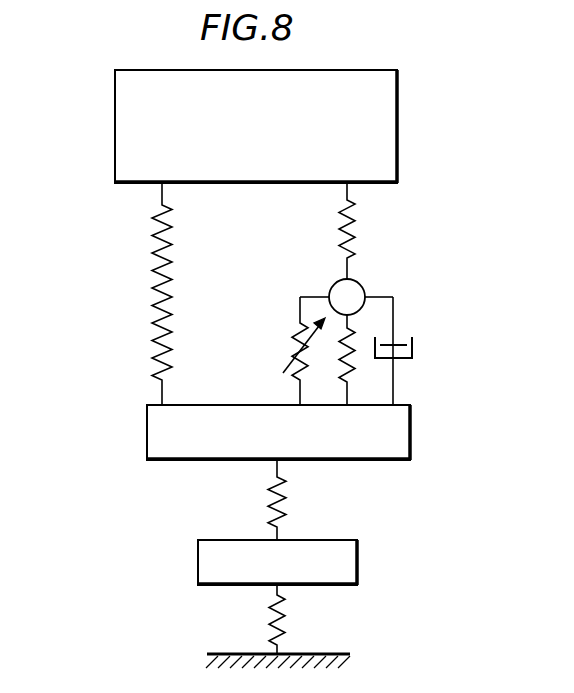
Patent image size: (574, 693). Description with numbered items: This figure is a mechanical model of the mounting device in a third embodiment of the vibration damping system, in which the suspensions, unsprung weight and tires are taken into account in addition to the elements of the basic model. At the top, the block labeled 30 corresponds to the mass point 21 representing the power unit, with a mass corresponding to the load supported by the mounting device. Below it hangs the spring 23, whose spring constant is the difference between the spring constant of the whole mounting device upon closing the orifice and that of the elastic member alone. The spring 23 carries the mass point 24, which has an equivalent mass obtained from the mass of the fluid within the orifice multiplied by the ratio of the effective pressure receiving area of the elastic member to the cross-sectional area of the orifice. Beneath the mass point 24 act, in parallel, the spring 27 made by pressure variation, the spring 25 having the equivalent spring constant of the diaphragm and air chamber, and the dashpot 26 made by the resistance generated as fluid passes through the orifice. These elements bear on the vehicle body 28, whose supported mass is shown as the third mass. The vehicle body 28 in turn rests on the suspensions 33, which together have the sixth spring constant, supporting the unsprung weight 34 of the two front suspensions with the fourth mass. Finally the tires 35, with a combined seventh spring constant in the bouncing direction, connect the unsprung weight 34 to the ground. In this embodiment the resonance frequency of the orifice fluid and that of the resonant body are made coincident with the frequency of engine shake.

The main mass m1 (vehicle body) 30 is at (256, 126).
The mass point 21 is at (123, 187).
The spring 23 is at (340, 222).
The mass point 24 is at (333, 287).
The spring 27 is at (297, 345).
The spring 25 is at (357, 345).
The dashpot 26 is at (413, 345).
The vehicle body 28 is at (413, 446).
The suspensions 33 is at (287, 498).
The unsprung weight 34 is at (360, 562).
The tires 35 is at (288, 620).